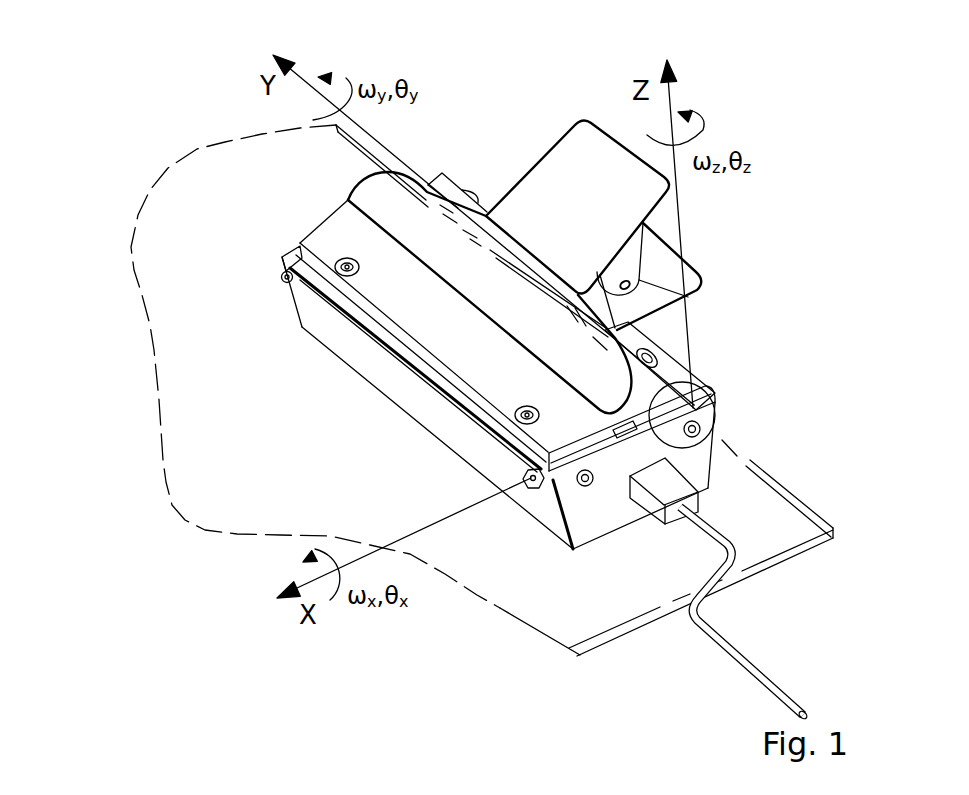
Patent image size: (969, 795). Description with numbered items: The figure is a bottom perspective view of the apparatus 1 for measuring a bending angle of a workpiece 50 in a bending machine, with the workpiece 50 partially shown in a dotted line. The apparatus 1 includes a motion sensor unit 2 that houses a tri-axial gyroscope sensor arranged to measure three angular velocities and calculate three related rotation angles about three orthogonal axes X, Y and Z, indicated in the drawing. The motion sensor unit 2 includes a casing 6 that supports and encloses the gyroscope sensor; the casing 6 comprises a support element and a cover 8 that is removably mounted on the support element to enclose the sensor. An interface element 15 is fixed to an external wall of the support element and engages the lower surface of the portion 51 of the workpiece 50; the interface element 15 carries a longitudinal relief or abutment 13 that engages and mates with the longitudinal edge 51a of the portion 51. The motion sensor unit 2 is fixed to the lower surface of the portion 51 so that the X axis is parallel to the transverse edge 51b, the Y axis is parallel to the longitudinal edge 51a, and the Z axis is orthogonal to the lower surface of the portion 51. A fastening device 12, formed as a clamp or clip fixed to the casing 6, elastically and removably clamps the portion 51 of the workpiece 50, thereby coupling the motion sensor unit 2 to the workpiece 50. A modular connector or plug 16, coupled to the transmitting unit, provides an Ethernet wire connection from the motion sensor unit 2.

The apparatus 1 is at (170, 110).
The motion sensor unit 2 is at (343, 395).
The casing 6 is at (462, 458).
The cover 8 is at (630, 557).
The fastening device 12 is at (540, 197).
The longitudinal relief or abutment 13 is at (717, 435).
The interface element 15 is at (395, 297).
The modular connector or plug 16 is at (663, 490).
The workpiece 50 is at (197, 425).
The portion 51 is at (542, 512).
The longitudinal edge 51a is at (778, 482).
The transverse edge 51b is at (773, 560).